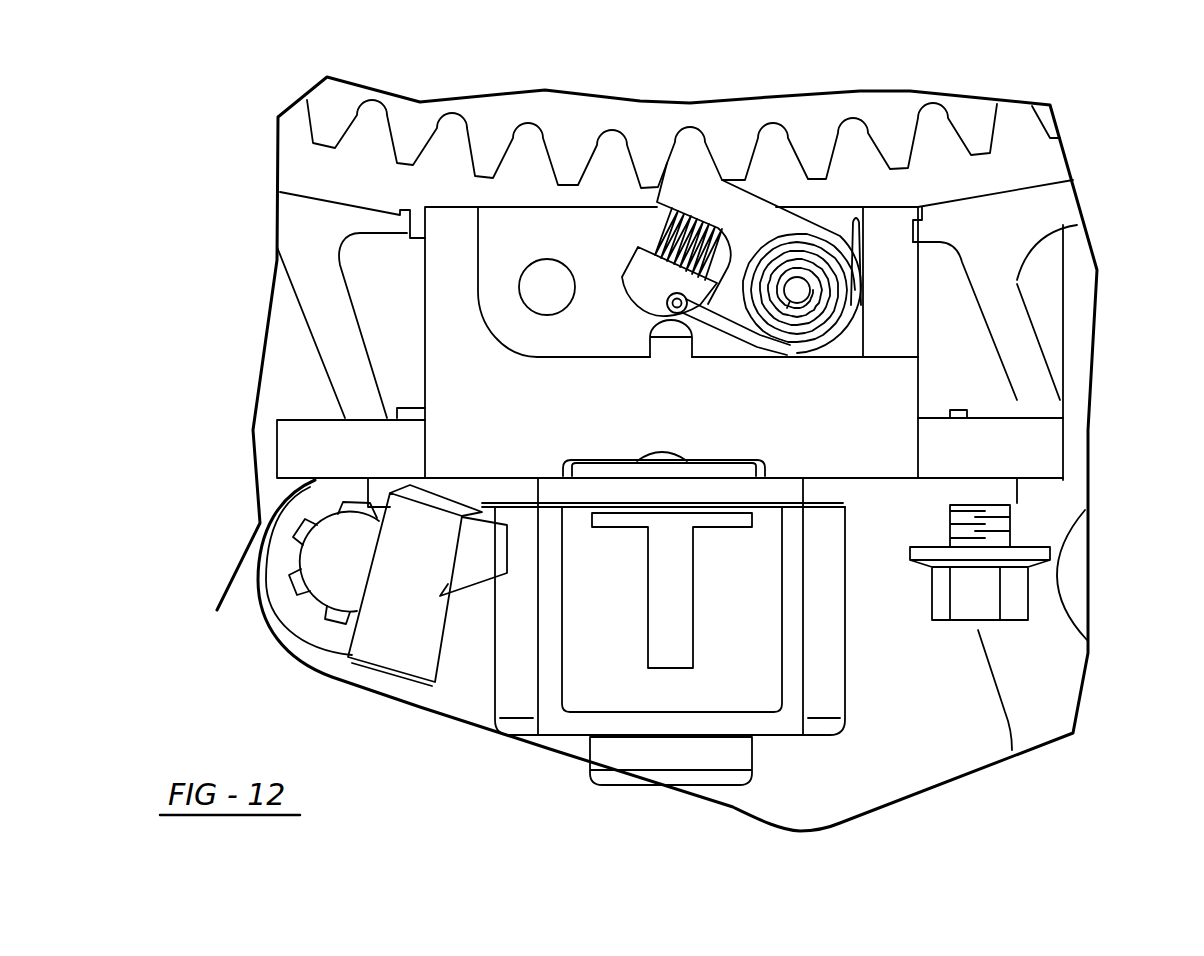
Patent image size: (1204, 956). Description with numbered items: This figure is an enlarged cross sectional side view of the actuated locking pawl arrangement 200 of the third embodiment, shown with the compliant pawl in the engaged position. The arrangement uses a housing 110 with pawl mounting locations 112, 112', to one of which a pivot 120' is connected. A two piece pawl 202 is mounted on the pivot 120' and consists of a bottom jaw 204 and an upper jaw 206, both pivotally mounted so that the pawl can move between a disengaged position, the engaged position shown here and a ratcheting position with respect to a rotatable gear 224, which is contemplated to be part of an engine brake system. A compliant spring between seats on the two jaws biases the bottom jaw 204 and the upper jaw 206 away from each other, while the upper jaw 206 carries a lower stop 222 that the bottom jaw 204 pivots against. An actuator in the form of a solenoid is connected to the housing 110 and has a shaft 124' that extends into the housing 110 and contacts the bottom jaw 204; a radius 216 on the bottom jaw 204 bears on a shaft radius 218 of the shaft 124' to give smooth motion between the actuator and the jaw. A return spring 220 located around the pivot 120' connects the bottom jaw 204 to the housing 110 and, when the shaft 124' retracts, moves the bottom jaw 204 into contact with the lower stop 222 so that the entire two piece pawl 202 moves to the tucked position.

The actuated locking pawl arrangement 200 is at (1125, 148).
The gear 224 is at (723, 140).
The upper jaw 206 is at (694, 198).
The return spring 220 is at (853, 252).
The two piece pawl 202 is at (882, 316).
The bottom jaw 204 is at (645, 277).
The radius 216 is at (614, 314).
The shaft radius 218 is at (655, 323).
The lower stop 222 is at (678, 347).
The pawl mounting location 112' is at (861, 316).
The housing 110 is at (333, 437).
The pawl mounting location 112 is at (372, 525).
The pivot 120' is at (855, 481).
The shaft 124' is at (670, 606).